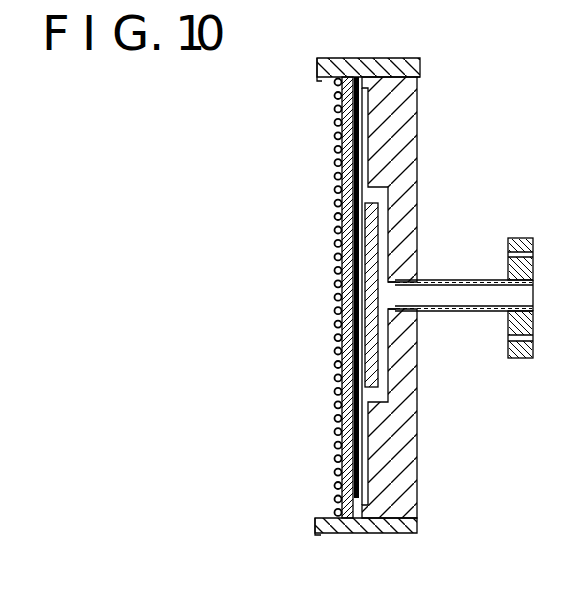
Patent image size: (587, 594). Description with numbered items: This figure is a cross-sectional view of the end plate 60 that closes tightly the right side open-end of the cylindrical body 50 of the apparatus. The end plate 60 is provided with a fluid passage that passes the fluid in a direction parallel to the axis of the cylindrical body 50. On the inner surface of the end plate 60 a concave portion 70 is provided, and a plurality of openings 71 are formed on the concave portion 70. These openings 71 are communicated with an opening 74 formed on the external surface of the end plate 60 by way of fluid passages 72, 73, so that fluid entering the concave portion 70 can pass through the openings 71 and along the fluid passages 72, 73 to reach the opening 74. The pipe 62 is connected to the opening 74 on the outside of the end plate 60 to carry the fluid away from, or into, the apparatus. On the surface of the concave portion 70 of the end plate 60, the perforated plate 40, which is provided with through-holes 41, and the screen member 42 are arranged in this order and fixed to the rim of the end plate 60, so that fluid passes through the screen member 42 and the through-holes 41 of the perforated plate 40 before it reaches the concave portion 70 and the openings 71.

The perforated plate 40 is at (342, 103).
The through-holes 41 is at (345, 487).
The screen member 42 is at (336, 132).
The cylindrical body 50 is at (400, 527).
The end plate 60 is at (400, 494).
The pipe 62 is at (480, 281).
The concave portion 70 is at (372, 96).
The openings 71 is at (368, 196).
The fluid passage 72 is at (380, 210).
The fluid passage 73 is at (425, 310).
The opening 74 is at (384, 297).